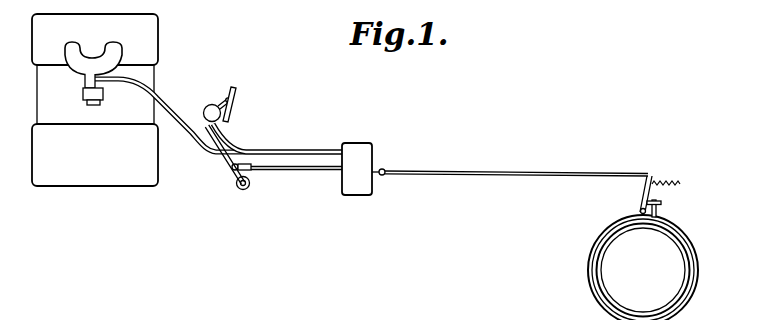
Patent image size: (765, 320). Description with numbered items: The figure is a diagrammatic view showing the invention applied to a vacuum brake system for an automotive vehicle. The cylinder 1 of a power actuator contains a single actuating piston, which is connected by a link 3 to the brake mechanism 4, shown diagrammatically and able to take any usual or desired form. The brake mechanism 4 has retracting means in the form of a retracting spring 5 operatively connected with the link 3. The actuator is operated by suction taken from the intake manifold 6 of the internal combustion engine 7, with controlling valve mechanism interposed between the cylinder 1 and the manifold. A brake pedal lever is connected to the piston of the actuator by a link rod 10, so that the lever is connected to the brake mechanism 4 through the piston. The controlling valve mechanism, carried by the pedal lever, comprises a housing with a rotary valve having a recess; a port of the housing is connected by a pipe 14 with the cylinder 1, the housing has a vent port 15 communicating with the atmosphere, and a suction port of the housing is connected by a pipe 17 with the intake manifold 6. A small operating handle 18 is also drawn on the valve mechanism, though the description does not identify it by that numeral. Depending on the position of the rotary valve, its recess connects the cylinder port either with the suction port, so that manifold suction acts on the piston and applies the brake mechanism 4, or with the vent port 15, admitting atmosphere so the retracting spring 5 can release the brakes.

The cylinder 1 is at (352, 148).
The link 3 is at (460, 172).
The brake mechanism 4 is at (628, 221).
The retracting spring 5 is at (674, 186).
The intake manifold 6 is at (118, 53).
The internal combustion engine 7 is at (93, 25).
The link rod 10 is at (288, 171).
The pipe 14 is at (283, 150).
The vent port 15 is at (205, 112).
The pipe 17 is at (160, 93).
The valve lever 18 is at (235, 96).